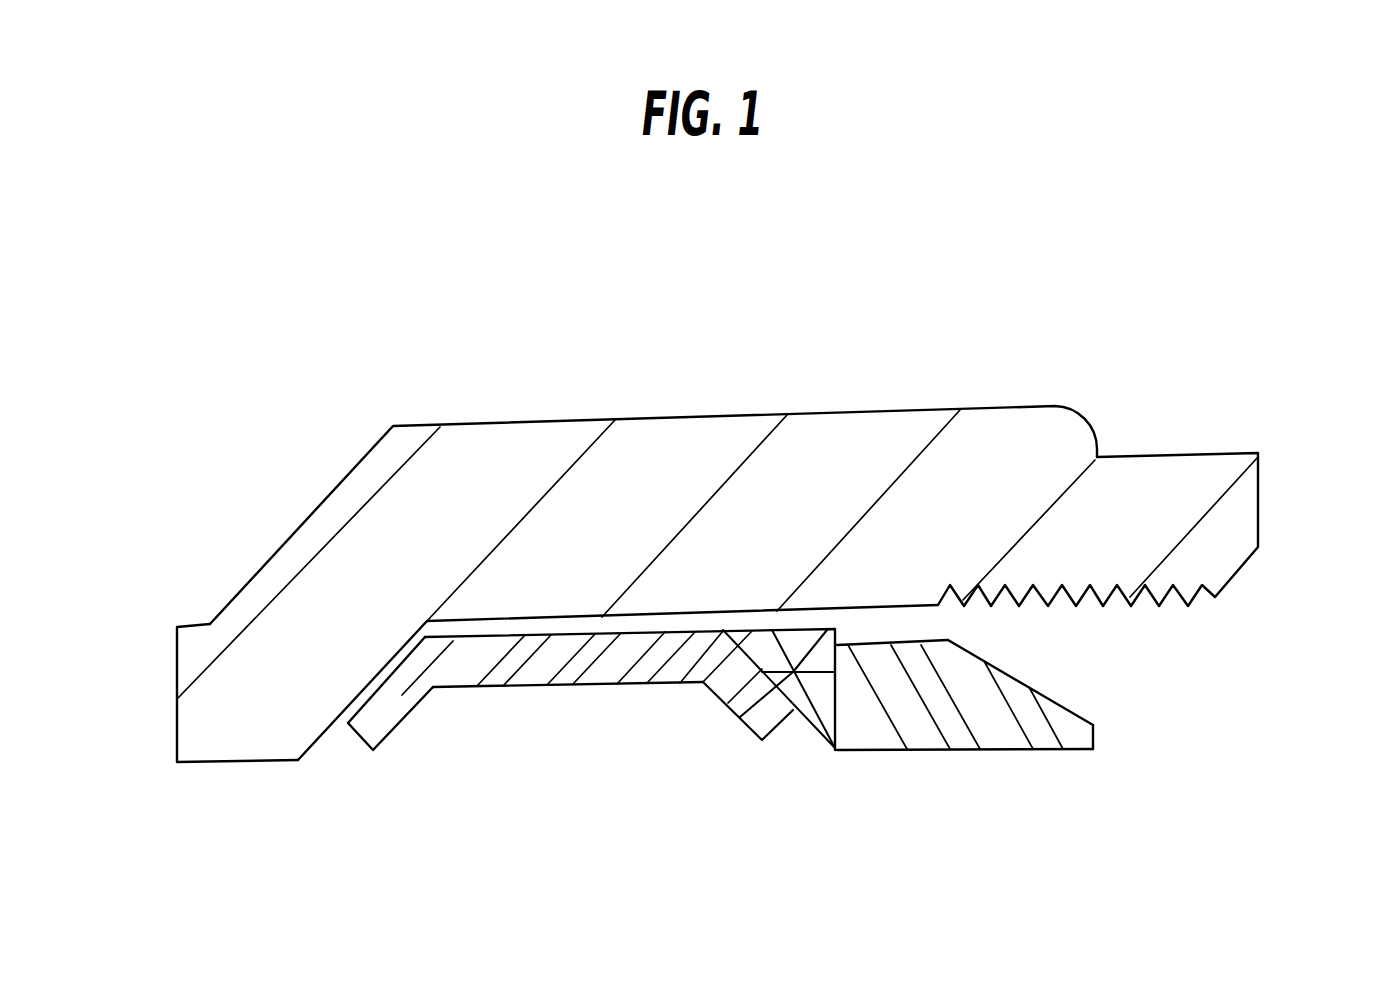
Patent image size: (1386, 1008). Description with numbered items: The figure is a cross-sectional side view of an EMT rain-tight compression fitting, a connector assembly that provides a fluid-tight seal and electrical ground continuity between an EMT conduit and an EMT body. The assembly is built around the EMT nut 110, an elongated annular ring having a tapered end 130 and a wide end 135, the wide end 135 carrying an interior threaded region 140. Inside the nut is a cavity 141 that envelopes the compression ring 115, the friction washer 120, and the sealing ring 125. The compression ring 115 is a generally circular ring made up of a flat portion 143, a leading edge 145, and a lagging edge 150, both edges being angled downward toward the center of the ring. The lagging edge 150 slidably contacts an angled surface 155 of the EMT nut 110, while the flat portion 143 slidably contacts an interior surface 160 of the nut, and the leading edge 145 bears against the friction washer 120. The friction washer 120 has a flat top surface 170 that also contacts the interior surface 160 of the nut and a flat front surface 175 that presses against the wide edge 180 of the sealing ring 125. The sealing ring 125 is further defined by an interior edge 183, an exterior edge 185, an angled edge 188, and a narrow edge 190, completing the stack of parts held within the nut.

The EMT nut 110 is at (903, 410).
The compression ring 115 is at (517, 688).
The friction washer 120 is at (825, 722).
The sealing ring 125 is at (1027, 748).
The tapered end 130 is at (233, 760).
The wide end 135 is at (1262, 497).
The interior threaded region 140 is at (1183, 593).
The cavity 141 is at (568, 627).
The flat portion 143 is at (603, 658).
The leading edge 145 is at (743, 677).
The lagging edge 150 is at (412, 688).
The angled surface 155 is at (323, 738).
The interior surface 160 is at (688, 610).
The flat top surface 170 is at (773, 629).
The flat front surface 175 is at (843, 730).
The wide edge 180 is at (840, 717).
The interior edge 183 is at (1057, 748).
The exterior edge 185 is at (887, 642).
The angled edge 188 is at (1053, 700).
The narrow edge 190 is at (1093, 735).